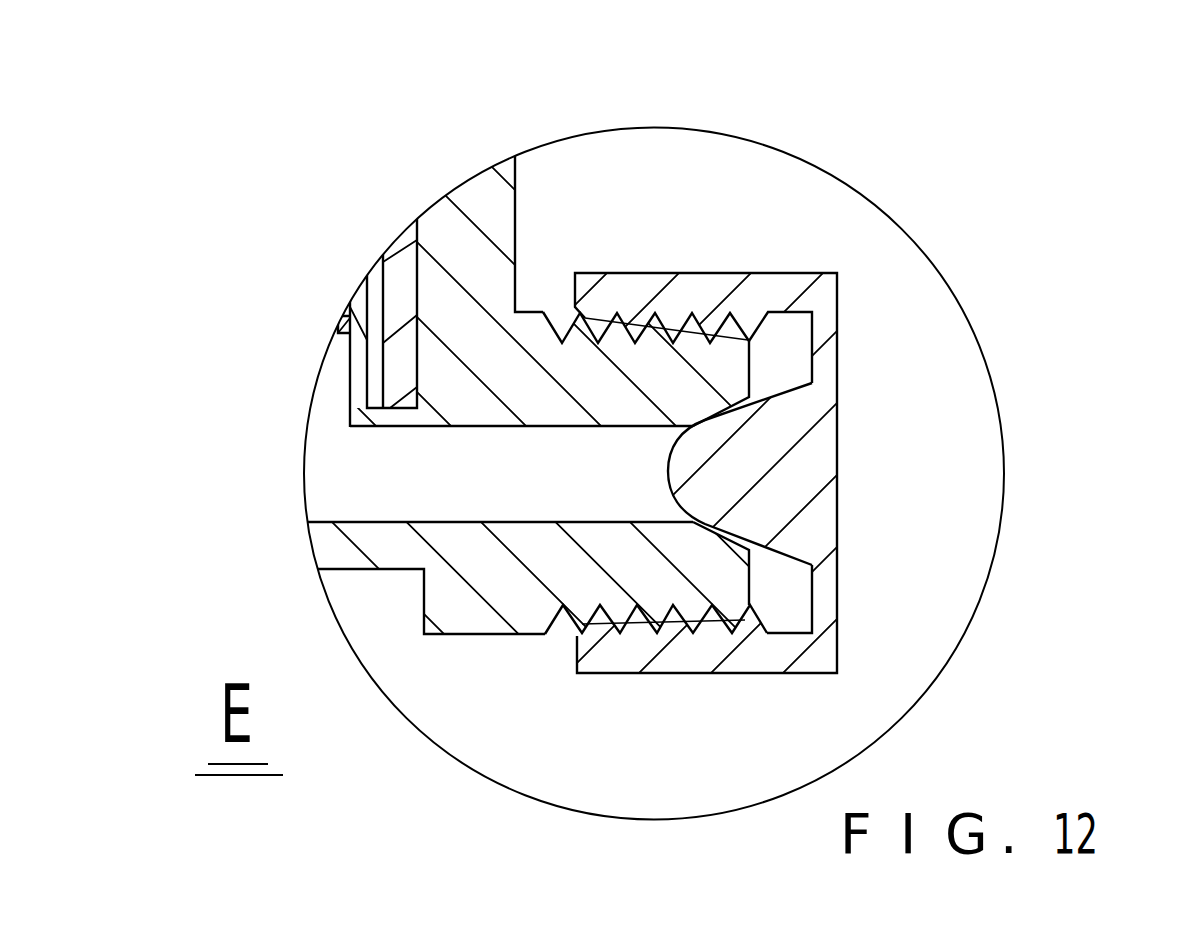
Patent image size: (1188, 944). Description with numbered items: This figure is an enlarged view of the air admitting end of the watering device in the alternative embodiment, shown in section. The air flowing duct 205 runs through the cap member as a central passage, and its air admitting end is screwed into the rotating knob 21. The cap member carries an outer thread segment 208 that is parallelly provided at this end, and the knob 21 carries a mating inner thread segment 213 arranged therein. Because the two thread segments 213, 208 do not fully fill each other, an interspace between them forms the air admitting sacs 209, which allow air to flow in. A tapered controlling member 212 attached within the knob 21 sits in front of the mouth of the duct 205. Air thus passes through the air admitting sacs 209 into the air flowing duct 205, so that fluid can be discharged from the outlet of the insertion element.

The rotating knob 21 is at (705, 273).
The air flowing duct 205 is at (347, 493).
The outer thread segment 208 is at (617, 612).
The air admitting sacs 209 is at (600, 330).
The tapered controlling member 212 is at (695, 472).
The inner thread segment 213 is at (750, 617).